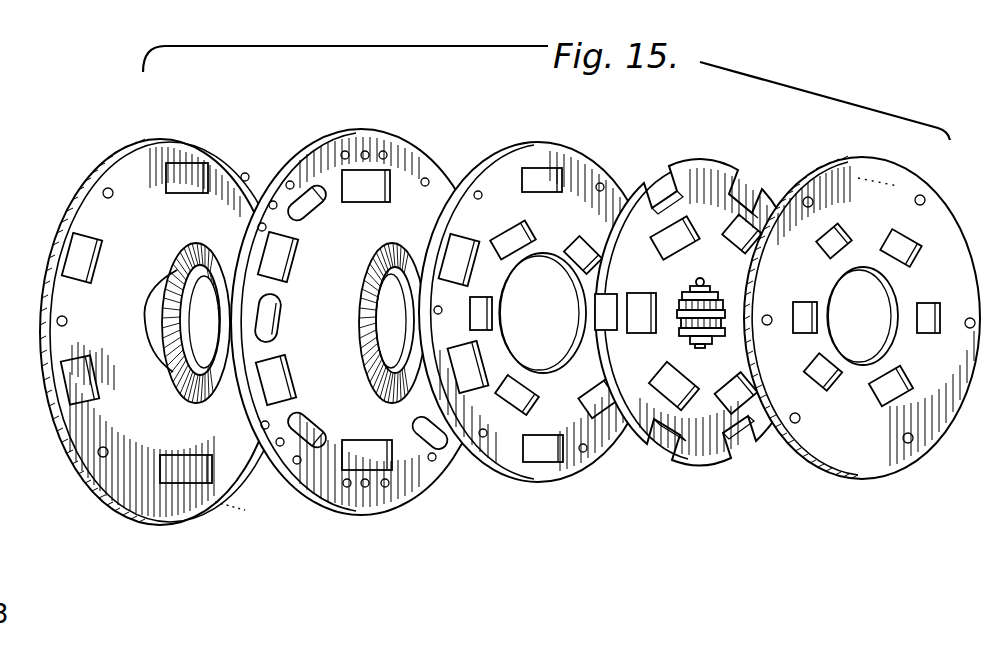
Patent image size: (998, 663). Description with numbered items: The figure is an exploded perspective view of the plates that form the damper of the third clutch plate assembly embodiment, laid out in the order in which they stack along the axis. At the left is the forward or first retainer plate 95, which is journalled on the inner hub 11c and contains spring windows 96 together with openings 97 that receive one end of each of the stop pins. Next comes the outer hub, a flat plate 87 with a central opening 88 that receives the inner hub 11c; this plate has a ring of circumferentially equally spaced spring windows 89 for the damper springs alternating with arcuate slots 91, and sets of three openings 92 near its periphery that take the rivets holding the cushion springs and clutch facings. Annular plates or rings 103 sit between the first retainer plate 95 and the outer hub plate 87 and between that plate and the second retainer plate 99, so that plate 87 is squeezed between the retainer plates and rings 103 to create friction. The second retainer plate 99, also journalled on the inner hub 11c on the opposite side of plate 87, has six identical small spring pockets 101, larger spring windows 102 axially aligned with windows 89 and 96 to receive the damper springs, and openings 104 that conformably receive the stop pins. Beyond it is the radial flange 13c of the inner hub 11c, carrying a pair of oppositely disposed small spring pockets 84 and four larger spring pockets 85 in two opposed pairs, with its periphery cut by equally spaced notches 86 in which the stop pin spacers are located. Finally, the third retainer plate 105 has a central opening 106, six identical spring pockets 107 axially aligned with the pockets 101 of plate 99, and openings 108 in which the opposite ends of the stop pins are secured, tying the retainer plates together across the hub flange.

The first retainer plate 95 is at (137, 517).
The spring windows 96 is at (186, 172).
The openings 97 is at (106, 188).
The annular plates or rings 103 is at (182, 250).
The flat plate 87 is at (435, 120).
The central opening 88 is at (365, 278).
The spring windows 89 is at (368, 180).
The arcuate slots 91 is at (308, 198).
The openings 92 is at (262, 222).
The second retainer plate 99 is at (497, 156).
The spring pockets 101 is at (578, 248).
The spring windows 102 is at (540, 172).
The openings 104 is at (485, 440).
The radial flange 13c is at (718, 160).
The notches 86 is at (648, 185).
The small spring pockets 84 is at (636, 300).
The larger spring pockets 85 is at (745, 233).
The inner hub 11c is at (724, 279).
The third retainer plate 105 is at (876, 158).
The central opening 106 is at (855, 292).
The spring pockets 107 is at (900, 258).
The openings 108 is at (797, 425).